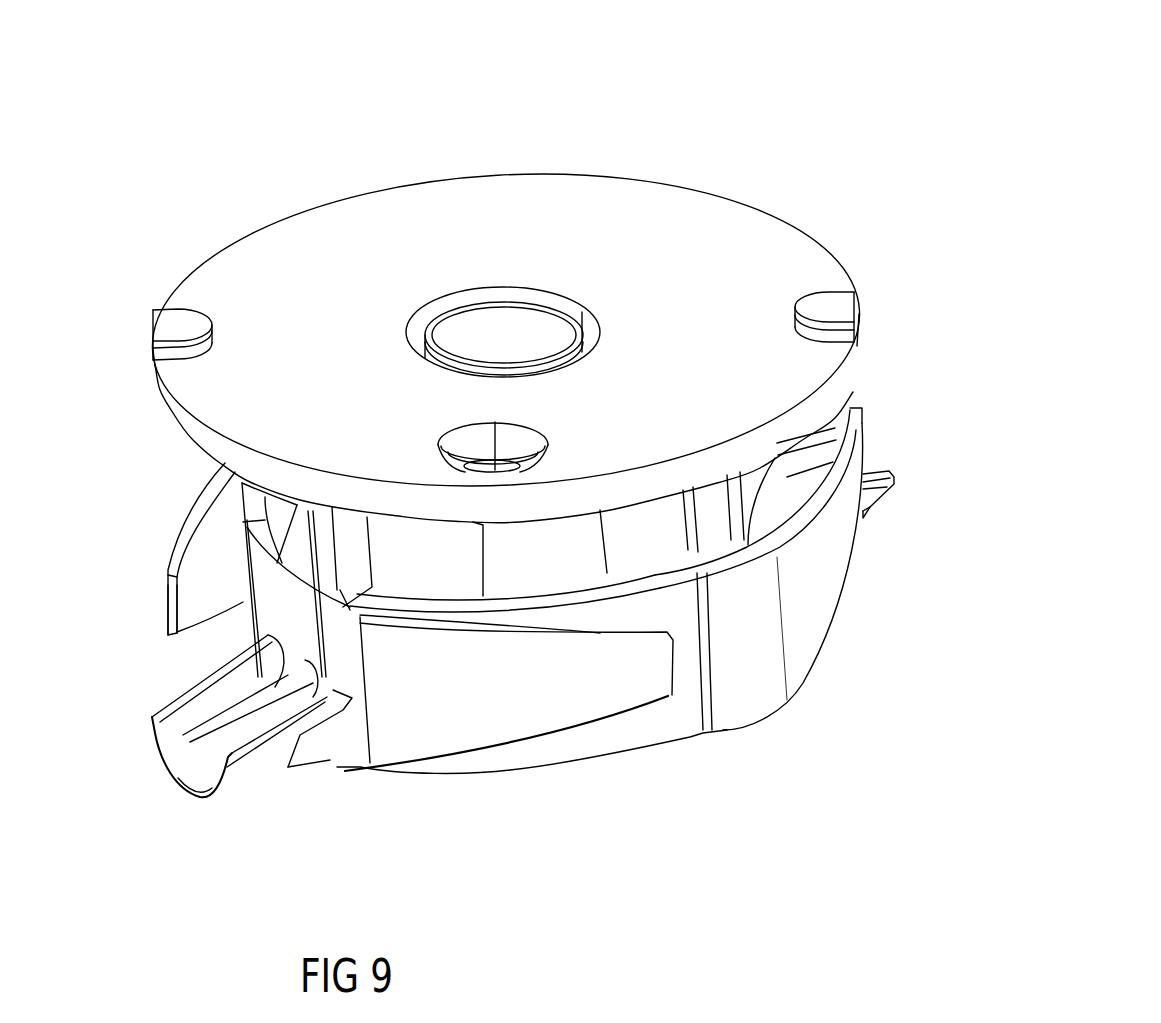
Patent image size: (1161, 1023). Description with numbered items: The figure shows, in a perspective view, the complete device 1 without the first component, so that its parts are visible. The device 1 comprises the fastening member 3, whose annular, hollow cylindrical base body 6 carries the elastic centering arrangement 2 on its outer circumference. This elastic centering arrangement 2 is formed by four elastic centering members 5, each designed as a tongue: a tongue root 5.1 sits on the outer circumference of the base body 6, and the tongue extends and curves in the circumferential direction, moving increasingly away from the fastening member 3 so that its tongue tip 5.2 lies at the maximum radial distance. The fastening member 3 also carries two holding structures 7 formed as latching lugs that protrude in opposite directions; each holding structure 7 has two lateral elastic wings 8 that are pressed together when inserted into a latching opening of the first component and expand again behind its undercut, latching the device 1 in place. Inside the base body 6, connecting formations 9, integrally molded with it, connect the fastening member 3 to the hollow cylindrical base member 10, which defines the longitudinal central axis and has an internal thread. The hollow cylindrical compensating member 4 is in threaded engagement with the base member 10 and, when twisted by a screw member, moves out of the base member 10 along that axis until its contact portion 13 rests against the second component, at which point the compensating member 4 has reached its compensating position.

The device 1 is at (778, 130).
The elastic centering arrangement 2 is at (448, 818).
The fastening member 3 is at (633, 737).
The compensating member 4 is at (843, 373).
The elastic centering member 5 is at (185, 510).
The tongue root 5.1 is at (352, 755).
The tongue tip 5.2 is at (165, 590).
The base body 6 is at (493, 703).
The holding structure 7 is at (190, 788).
The lateral elastic wing 8 is at (150, 718).
The connecting formation 9 is at (547, 600).
The base member 10 is at (427, 598).
The contact portion 13 is at (632, 203).